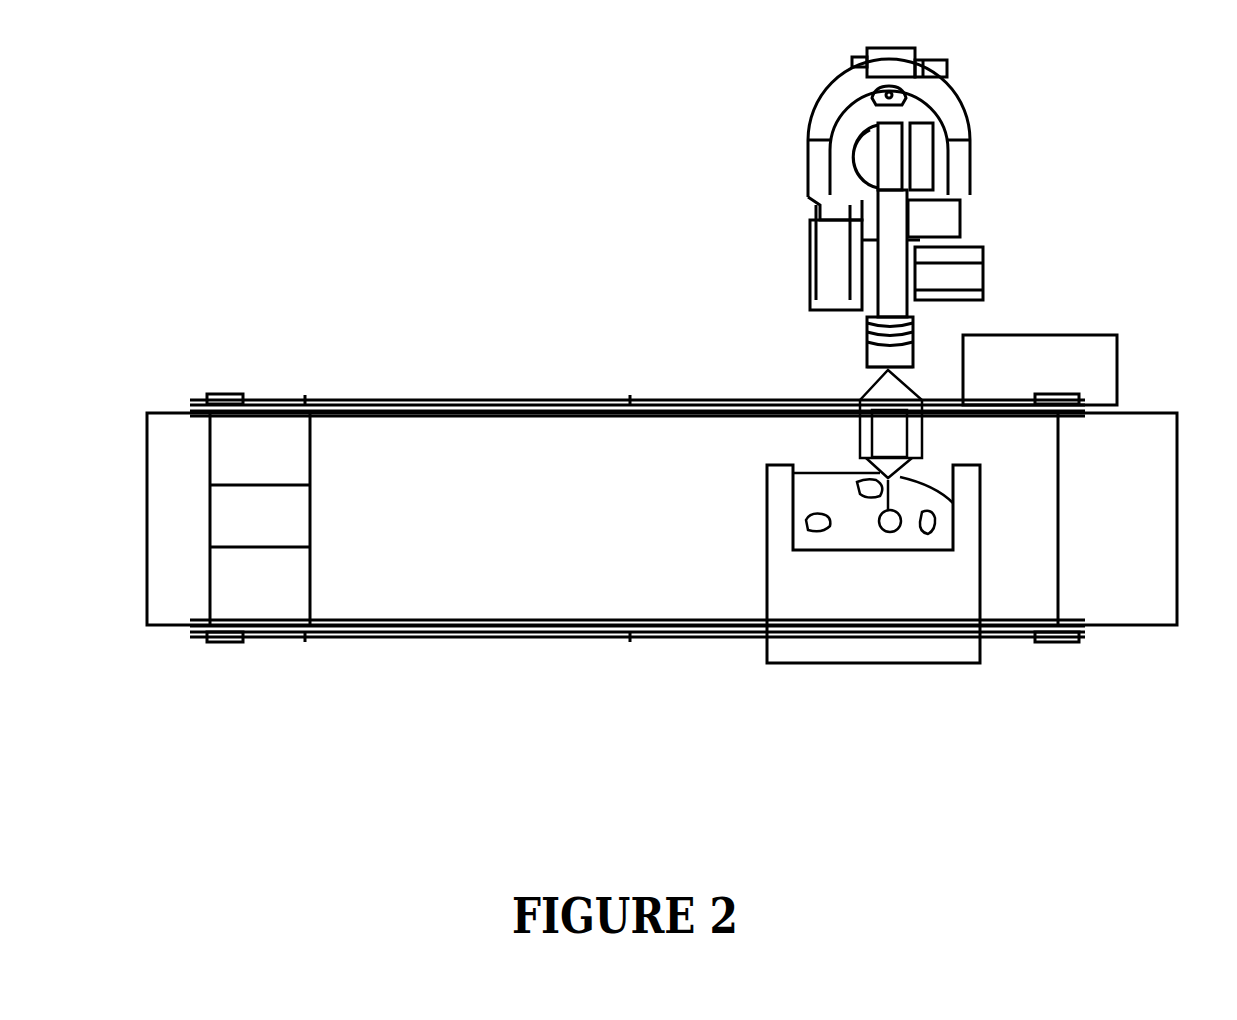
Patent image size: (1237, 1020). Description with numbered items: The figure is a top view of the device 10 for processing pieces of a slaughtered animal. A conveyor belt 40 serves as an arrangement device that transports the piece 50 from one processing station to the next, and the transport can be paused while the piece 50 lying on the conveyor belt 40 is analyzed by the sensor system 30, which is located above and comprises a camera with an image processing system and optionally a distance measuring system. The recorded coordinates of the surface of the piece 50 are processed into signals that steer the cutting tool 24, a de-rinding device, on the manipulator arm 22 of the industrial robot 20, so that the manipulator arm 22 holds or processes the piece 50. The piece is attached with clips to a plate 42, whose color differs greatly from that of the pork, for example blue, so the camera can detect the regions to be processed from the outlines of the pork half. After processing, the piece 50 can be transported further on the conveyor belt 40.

The device 10 is at (399, 300).
The industrial robot 20 is at (970, 160).
The manipulator arm 22 is at (872, 478).
The cutting tool 24 is at (900, 530).
The sensor system 30 is at (275, 508).
The conveyor belt 40 is at (662, 480).
The plate 42 is at (873, 564).
The piece 50 is at (848, 530).